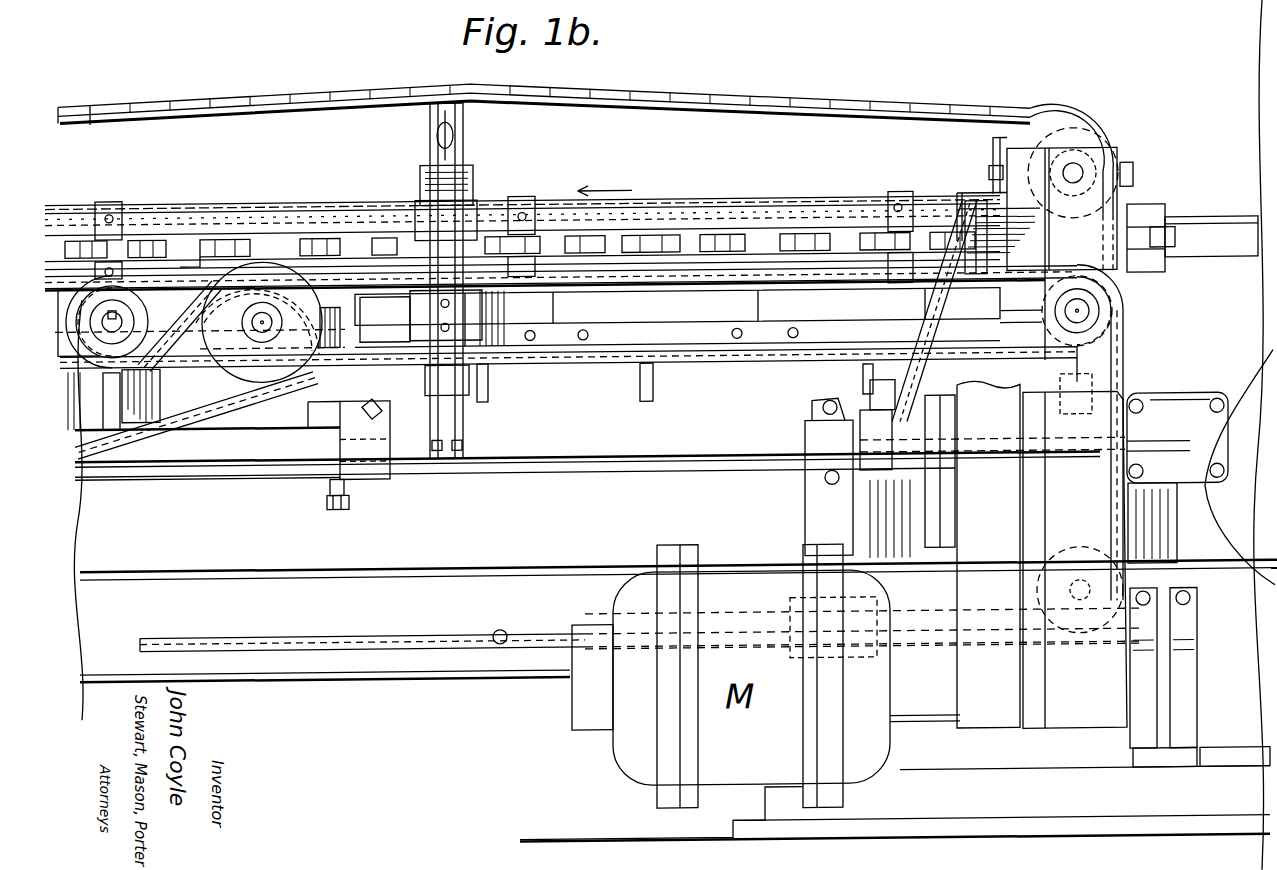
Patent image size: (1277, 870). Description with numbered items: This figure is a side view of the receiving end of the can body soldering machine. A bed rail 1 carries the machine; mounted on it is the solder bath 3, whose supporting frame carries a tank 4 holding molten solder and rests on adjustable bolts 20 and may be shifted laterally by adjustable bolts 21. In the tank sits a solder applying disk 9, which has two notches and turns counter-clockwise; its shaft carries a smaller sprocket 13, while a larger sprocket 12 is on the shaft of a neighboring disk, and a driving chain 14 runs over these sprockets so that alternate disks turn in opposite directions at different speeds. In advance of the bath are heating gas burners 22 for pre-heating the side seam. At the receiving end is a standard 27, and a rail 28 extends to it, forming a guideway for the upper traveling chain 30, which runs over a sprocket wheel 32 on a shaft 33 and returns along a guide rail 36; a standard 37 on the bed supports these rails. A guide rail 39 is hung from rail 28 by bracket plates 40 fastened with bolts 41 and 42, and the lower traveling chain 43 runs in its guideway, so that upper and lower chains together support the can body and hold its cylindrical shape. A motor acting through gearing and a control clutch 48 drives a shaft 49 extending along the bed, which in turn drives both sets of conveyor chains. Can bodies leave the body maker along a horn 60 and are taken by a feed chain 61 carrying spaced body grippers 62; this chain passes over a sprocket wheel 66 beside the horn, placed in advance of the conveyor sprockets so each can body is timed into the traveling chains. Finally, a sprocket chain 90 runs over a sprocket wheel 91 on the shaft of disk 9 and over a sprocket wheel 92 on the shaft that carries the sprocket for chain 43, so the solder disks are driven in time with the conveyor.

The bed rail 1 is at (678, 593).
The solder bath 3 is at (255, 388).
The tank 4 is at (190, 340).
The solder applying disk 9 is at (152, 297).
The sprocket 12 is at (265, 272).
The sprocket 13 is at (176, 370).
The driving chain 14 is at (148, 430).
The adjustable bolts 20 is at (326, 490).
The adjustable bolts 21 is at (358, 410).
The heating gas burners 22 is at (677, 318).
The standard 27 is at (985, 321).
The rail 28 is at (752, 203).
The traveling chain 30 is at (765, 112).
The sprocket wheel 32 is at (1047, 135).
The shaft 33 is at (1105, 152).
The guide rail 36 is at (648, 111).
The standard 37 is at (462, 426).
The guide rail 39 is at (730, 273).
The bracket plates 40 is at (109, 205).
The bolt 41 is at (518, 216).
The bolt 42 is at (520, 284).
The traveling chain 43 is at (1126, 360).
The control clutch 48 is at (935, 441).
The shaft 49 is at (532, 634).
The horn 60 is at (1205, 240).
The feed chain 61 is at (323, 241).
The body grippers 62 is at (350, 242).
The sprocket wheel 66 is at (1176, 252).
The sprocket chain 90 is at (704, 370).
The sprocket wheel 91 is at (122, 296).
The sprocket wheel 92 is at (1100, 321).